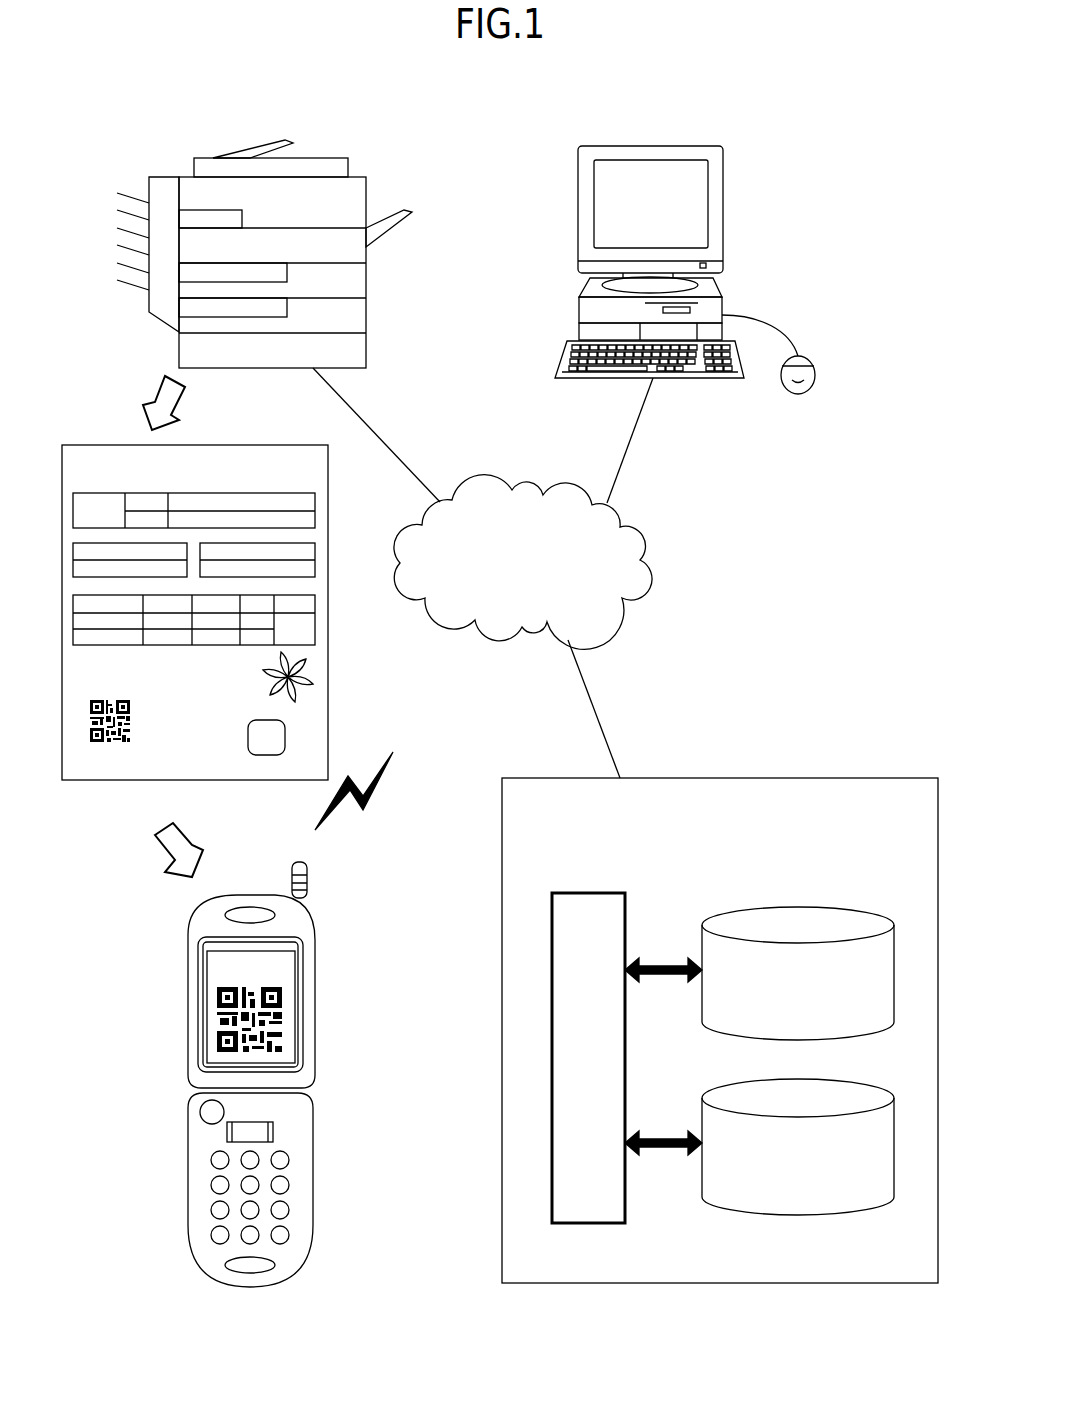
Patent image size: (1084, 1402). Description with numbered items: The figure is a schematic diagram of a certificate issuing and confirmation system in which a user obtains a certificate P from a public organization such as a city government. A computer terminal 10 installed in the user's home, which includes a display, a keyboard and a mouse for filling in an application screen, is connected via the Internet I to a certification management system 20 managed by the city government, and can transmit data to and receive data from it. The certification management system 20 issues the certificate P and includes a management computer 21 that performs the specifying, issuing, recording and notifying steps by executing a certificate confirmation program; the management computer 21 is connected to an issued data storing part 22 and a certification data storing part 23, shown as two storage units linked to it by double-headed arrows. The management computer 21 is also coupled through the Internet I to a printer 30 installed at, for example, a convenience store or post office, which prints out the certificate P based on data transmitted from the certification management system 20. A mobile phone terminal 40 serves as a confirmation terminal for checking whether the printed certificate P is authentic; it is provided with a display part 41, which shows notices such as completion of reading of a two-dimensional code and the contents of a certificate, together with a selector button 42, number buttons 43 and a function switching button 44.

The computer terminal 10 is at (723, 194).
The certification management system 20 is at (720, 1007).
The management computer 21 is at (597, 893).
The issued data storing part 22 is at (855, 907).
The certification data storing part 23 is at (865, 1208).
The printer 30 is at (327, 152).
The mobile phone terminal 40 is at (265, 1074).
The display part 41 is at (303, 1002).
The selector button 42 is at (273, 1130).
The number buttons 43 is at (322, 1152).
The function switching button 44 is at (200, 1112).
The certificate P is at (88, 445).
The Internet I is at (478, 475).